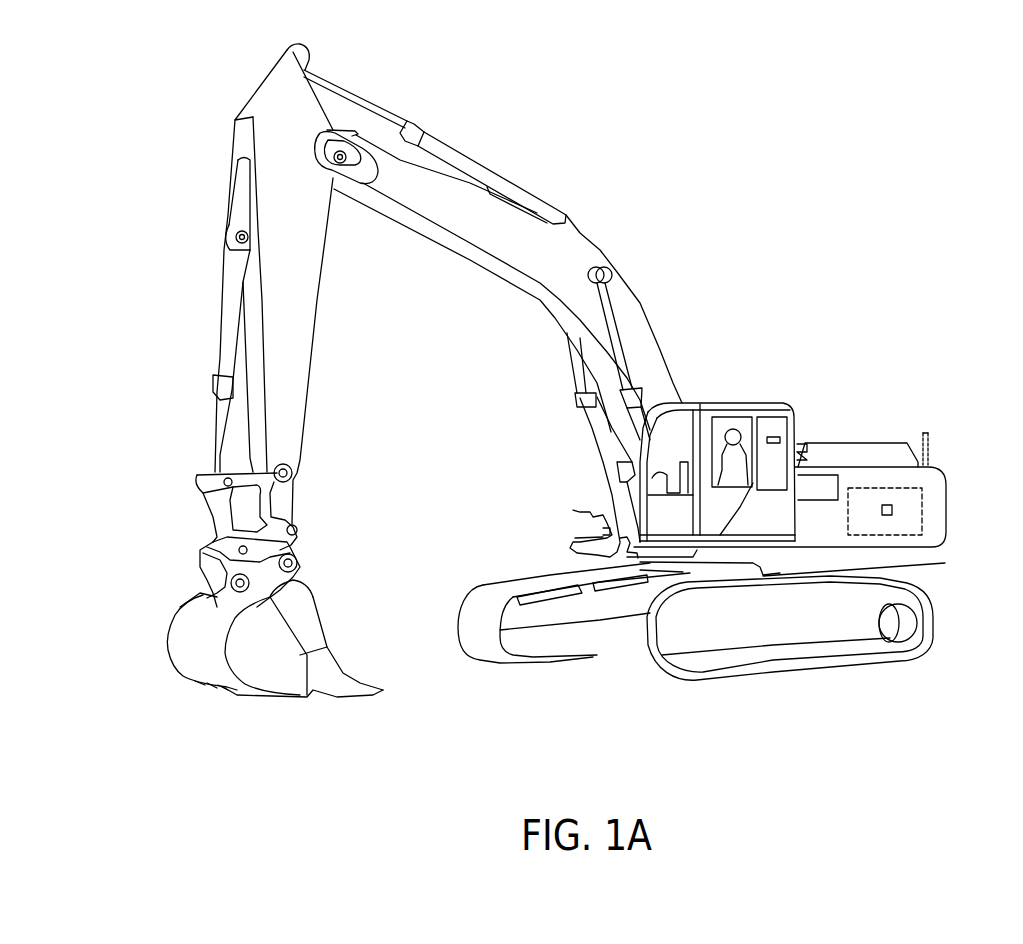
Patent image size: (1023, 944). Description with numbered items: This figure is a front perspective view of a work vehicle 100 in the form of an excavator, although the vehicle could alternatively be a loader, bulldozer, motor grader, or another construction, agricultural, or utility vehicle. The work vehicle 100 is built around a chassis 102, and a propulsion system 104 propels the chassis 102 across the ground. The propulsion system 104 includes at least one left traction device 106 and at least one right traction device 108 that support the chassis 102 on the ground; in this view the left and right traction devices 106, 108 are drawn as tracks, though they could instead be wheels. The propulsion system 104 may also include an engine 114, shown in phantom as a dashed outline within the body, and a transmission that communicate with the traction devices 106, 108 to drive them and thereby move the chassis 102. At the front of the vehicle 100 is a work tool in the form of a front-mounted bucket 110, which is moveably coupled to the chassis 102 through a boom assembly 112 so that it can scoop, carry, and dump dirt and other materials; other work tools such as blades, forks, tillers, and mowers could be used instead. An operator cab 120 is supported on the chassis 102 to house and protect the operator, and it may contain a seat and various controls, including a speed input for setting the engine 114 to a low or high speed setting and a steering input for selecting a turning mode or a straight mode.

The work vehicle 100 is at (736, 210).
The chassis 102 is at (928, 548).
The propulsion system 104 is at (730, 698).
The left traction device 106 is at (827, 645).
The right traction device 108 is at (503, 590).
The bucket 110 is at (297, 630).
The boom assembly 112 is at (485, 218).
The engine 114 is at (935, 495).
The operator cab 120 is at (733, 400).